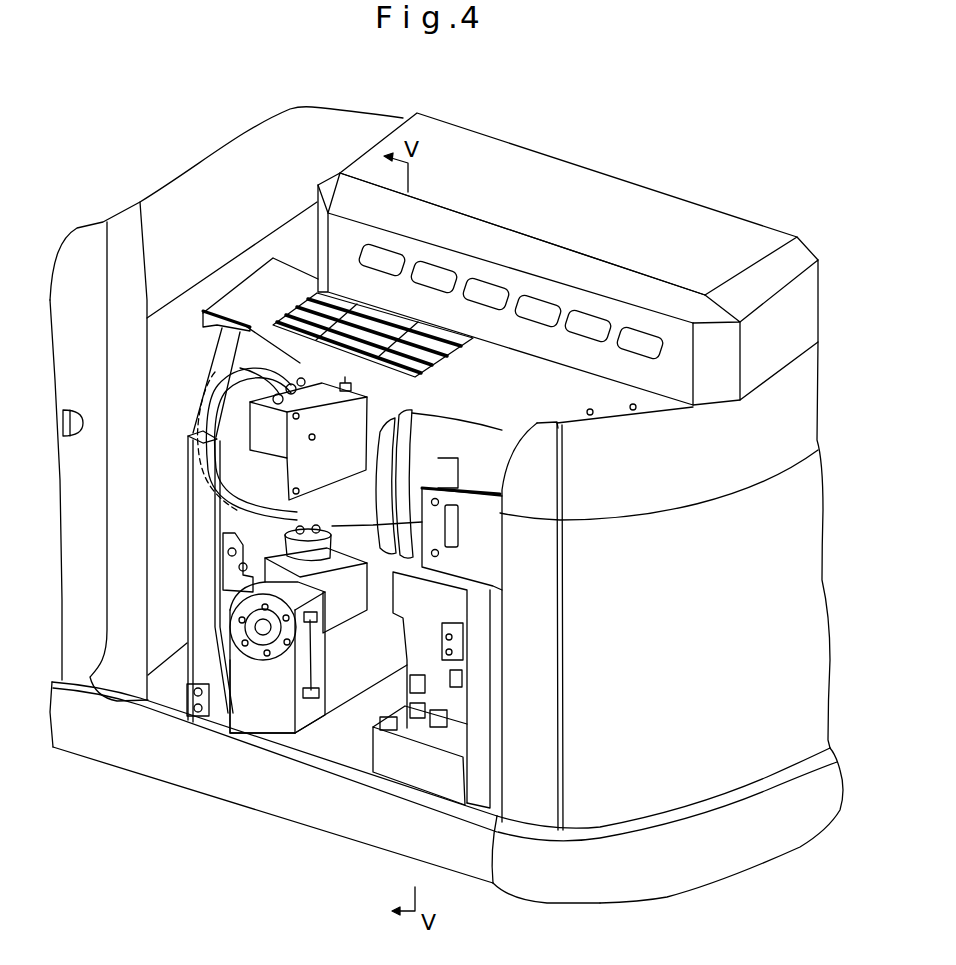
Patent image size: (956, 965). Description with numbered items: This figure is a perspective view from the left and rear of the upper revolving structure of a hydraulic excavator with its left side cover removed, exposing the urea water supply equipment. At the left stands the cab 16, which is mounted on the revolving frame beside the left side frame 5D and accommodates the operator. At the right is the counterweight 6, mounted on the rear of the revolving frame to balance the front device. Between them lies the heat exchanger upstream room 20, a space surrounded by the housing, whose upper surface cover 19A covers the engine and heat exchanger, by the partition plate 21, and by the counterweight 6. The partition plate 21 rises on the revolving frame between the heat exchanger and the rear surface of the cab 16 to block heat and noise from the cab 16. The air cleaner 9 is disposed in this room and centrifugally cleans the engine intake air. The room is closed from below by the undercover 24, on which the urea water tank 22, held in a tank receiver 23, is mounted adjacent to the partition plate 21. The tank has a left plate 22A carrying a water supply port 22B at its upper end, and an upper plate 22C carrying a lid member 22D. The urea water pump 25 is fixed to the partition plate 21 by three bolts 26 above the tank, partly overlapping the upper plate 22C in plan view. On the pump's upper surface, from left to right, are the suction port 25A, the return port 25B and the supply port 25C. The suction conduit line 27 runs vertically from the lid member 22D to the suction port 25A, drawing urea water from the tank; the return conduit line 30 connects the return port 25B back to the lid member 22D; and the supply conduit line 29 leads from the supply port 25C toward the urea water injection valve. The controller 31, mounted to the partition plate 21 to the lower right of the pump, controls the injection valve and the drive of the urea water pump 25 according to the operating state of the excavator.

The cab 16 is at (268, 175).
The left side frame 5D is at (123, 737).
The counterweight 6 is at (768, 540).
The upper surface cover 19A is at (533, 397).
The air cleaner 9 is at (478, 452).
The bolts 26 is at (413, 377).
The supply conduit line 29 is at (335, 318).
The return port 25B is at (287, 376).
The supply port 25C is at (292, 378).
The suction port 25A is at (253, 366).
The suction conduit line 27 is at (233, 393).
The urea water pump 25 is at (267, 428).
The controller 31 is at (352, 385).
The partition plate 21 is at (188, 495).
The return conduit line 30 is at (300, 518).
The lid member 22D is at (325, 550).
The upper plate 22C is at (448, 528).
The heat exchanger upstream room 20 is at (423, 590).
The undercover 24 is at (417, 625).
The urea water tank 22 is at (274, 713).
The water supply port 22B is at (263, 628).
The left plate 22A is at (247, 703).
The tank receiver 23 is at (321, 735).